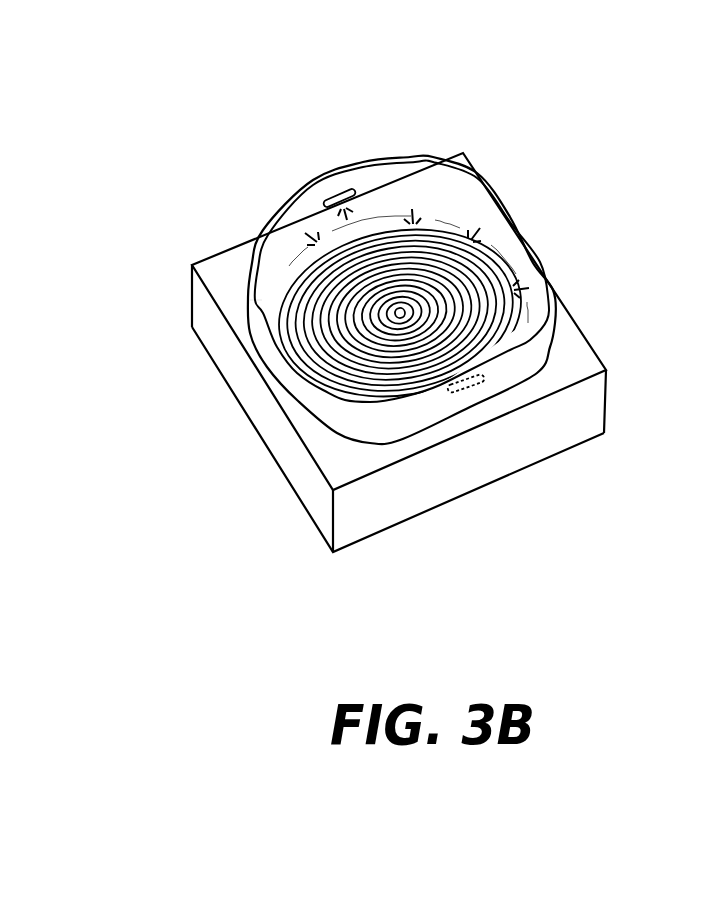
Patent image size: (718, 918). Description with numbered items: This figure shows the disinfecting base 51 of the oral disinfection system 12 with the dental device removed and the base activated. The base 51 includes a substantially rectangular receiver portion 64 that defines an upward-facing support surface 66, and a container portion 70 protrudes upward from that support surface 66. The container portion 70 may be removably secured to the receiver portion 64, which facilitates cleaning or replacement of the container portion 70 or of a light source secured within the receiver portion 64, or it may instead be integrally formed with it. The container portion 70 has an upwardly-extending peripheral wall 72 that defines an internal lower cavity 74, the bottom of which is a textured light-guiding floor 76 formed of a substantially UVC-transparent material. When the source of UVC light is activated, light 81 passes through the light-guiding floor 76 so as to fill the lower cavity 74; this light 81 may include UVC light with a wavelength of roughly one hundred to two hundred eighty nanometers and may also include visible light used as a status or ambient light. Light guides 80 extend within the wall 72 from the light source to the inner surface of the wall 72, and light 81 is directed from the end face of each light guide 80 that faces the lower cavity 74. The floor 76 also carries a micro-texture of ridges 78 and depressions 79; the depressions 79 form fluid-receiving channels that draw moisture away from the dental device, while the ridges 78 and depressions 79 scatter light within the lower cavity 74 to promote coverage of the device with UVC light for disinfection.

The oral disinfection system 12 is at (203, 124).
The disinfecting base 51 is at (142, 267).
The receiver portion 64 is at (607, 378).
The support surface 66 is at (333, 457).
The container portion 70 is at (537, 370).
The peripheral wall 72 is at (246, 288).
The lower cavity 74 is at (467, 203).
The light-guiding floor 76 is at (460, 293).
The ridges 78 is at (293, 320).
The depressions 79 is at (292, 357).
The light guides 80 is at (326, 191).
The light 81 is at (312, 238).